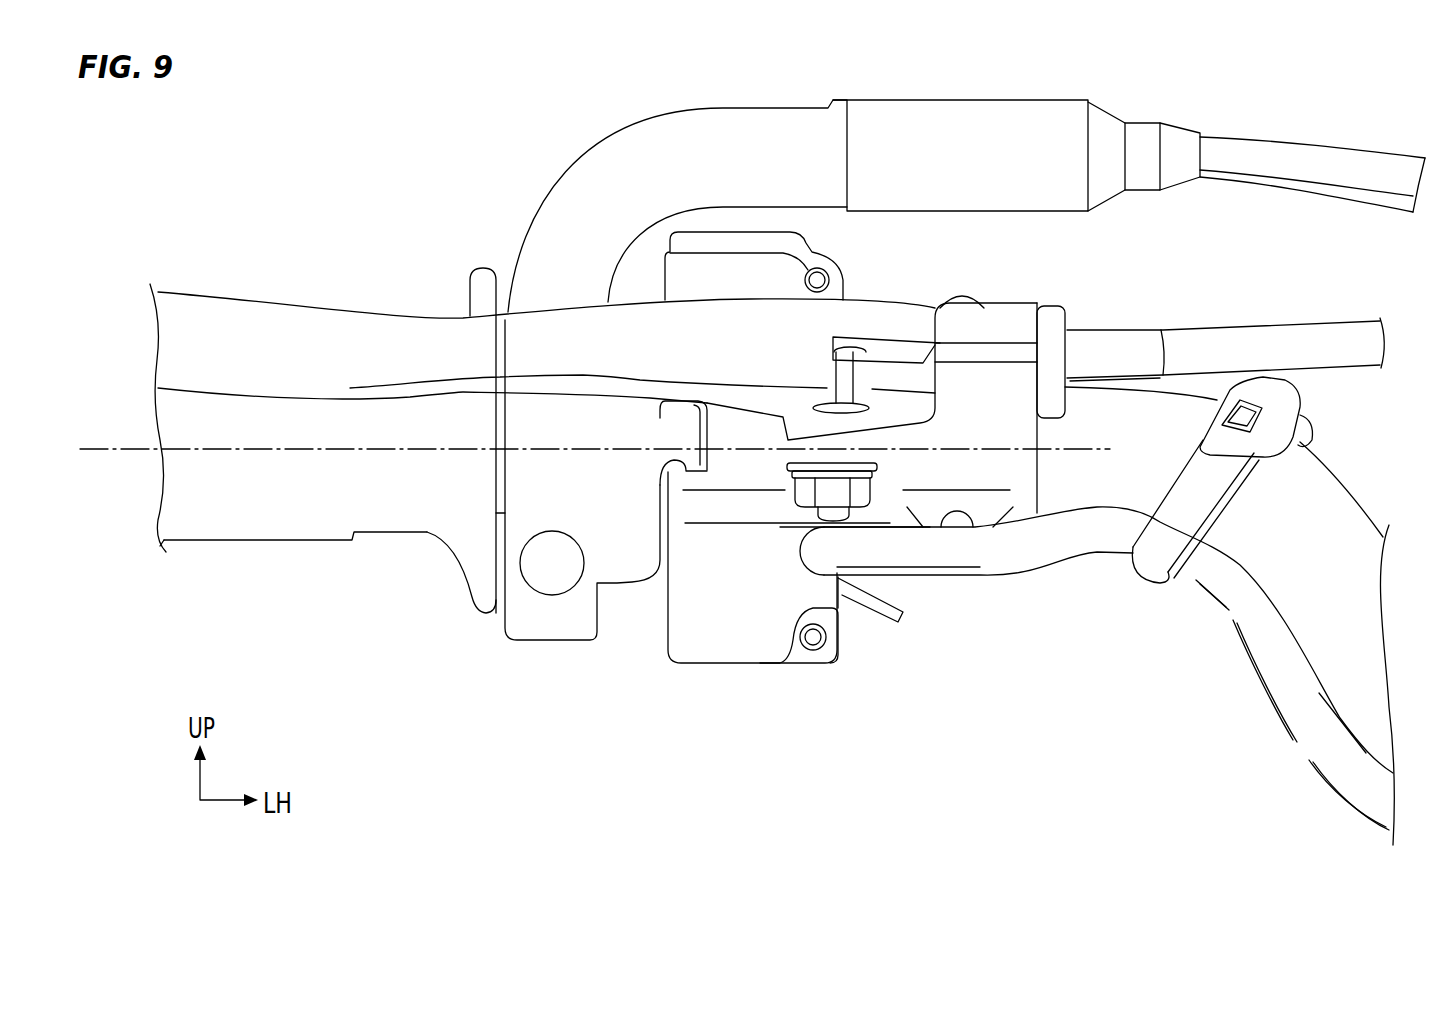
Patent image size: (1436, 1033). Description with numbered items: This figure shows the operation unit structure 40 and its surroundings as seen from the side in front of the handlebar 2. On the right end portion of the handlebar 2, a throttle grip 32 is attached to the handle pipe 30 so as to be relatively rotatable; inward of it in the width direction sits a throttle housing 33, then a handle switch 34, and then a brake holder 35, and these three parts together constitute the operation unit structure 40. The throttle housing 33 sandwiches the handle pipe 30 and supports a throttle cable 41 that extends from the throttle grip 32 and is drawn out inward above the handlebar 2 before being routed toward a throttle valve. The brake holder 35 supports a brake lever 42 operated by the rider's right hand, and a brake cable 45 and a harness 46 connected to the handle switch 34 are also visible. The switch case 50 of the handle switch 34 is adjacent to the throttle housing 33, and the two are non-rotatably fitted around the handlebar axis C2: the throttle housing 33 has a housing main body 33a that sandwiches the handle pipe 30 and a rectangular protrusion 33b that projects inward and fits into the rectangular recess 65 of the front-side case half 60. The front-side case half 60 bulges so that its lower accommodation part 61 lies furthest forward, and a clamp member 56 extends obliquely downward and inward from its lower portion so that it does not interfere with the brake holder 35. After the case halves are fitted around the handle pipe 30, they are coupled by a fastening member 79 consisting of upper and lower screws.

The handlebar 2 is at (268, 556).
The handlebar axis C2 is at (118, 456).
The handle pipe 30 is at (1100, 480).
The throttle grip 32 is at (210, 543).
The throttle housing 33 is at (519, 642).
The housing main body 33a is at (503, 506).
The rectangular protrusion 33b is at (691, 432).
The handle switch 34 is at (821, 666).
The brake holder 35 is at (1017, 512).
The operation unit structure 40 is at (908, 676).
The throttle cable 41 is at (1353, 187).
The brake lever 42 is at (241, 305).
The brake cable 45 is at (1307, 347).
The harness 46 is at (1080, 556).
The switch case 50 is at (714, 665).
The clamp member 56 is at (906, 618).
The front-side case half 60 is at (841, 262).
The lower accommodation part 61 is at (684, 645).
The rectangular recess 65 is at (656, 462).
The fastening member 79 is at (816, 637).